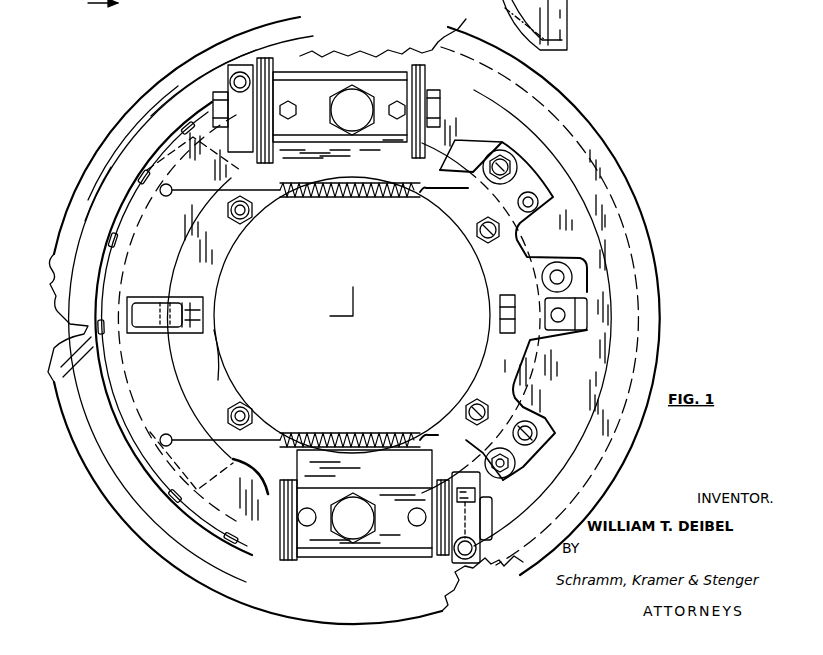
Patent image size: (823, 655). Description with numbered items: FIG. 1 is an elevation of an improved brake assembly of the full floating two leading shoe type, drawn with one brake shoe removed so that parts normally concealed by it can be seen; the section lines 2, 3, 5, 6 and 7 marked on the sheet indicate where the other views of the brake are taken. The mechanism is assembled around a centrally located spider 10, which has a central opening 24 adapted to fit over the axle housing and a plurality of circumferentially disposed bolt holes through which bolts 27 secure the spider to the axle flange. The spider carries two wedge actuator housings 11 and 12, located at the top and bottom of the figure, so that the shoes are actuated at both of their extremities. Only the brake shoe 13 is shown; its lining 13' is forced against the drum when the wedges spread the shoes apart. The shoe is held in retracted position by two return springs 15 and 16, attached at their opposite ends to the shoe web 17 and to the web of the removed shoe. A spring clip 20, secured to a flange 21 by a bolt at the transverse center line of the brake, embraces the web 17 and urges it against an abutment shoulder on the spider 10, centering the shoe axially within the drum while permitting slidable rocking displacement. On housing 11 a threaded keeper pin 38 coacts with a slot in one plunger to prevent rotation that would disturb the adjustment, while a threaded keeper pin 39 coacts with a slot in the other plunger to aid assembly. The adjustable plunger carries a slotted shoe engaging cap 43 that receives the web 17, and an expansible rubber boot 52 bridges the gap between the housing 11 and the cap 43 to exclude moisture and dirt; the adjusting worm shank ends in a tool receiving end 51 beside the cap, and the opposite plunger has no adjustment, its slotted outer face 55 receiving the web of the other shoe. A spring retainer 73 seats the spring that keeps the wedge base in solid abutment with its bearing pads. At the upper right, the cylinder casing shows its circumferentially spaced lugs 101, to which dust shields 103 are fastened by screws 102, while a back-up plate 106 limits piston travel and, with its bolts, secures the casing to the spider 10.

The spider 10 is at (215, 274).
The wedge actuator housing 11 is at (380, 140).
The wedge actuator housing 12 is at (380, 492).
The brake shoe 13 is at (353, 322).
The lining 13' is at (79, 186).
The return spring 15 is at (362, 200).
The return spring 16 is at (340, 434).
The shoe web 17 is at (178, 262).
The spring clip 20 is at (193, 321).
The flange 21 is at (191, 302).
The central opening 24 is at (223, 370).
The bolts 27 is at (241, 224).
The threaded keeper pin 38 is at (290, 103).
The threaded keeper pin 39 is at (401, 102).
The shoe engaging cap 43 is at (207, 89).
The cylinder end cap 51 is at (418, 64).
The boot 52 is at (230, 64).
The outer face of plunger 55 is at (488, 62).
The spring retainer 73 is at (340, 115).
The lugs 101 is at (578, 6).
The screws 102 is at (572, 17).
The dust shields 103 is at (568, 35).
The back-up plate 106 is at (527, 425).
The section line 2- 2 is at (323, 18).
The section line 3- 3 is at (323, 43).
The section line 5- 5 is at (440, 602).
The section line 6- 6 is at (473, 180).
The section line 7- 7 is at (460, 402).